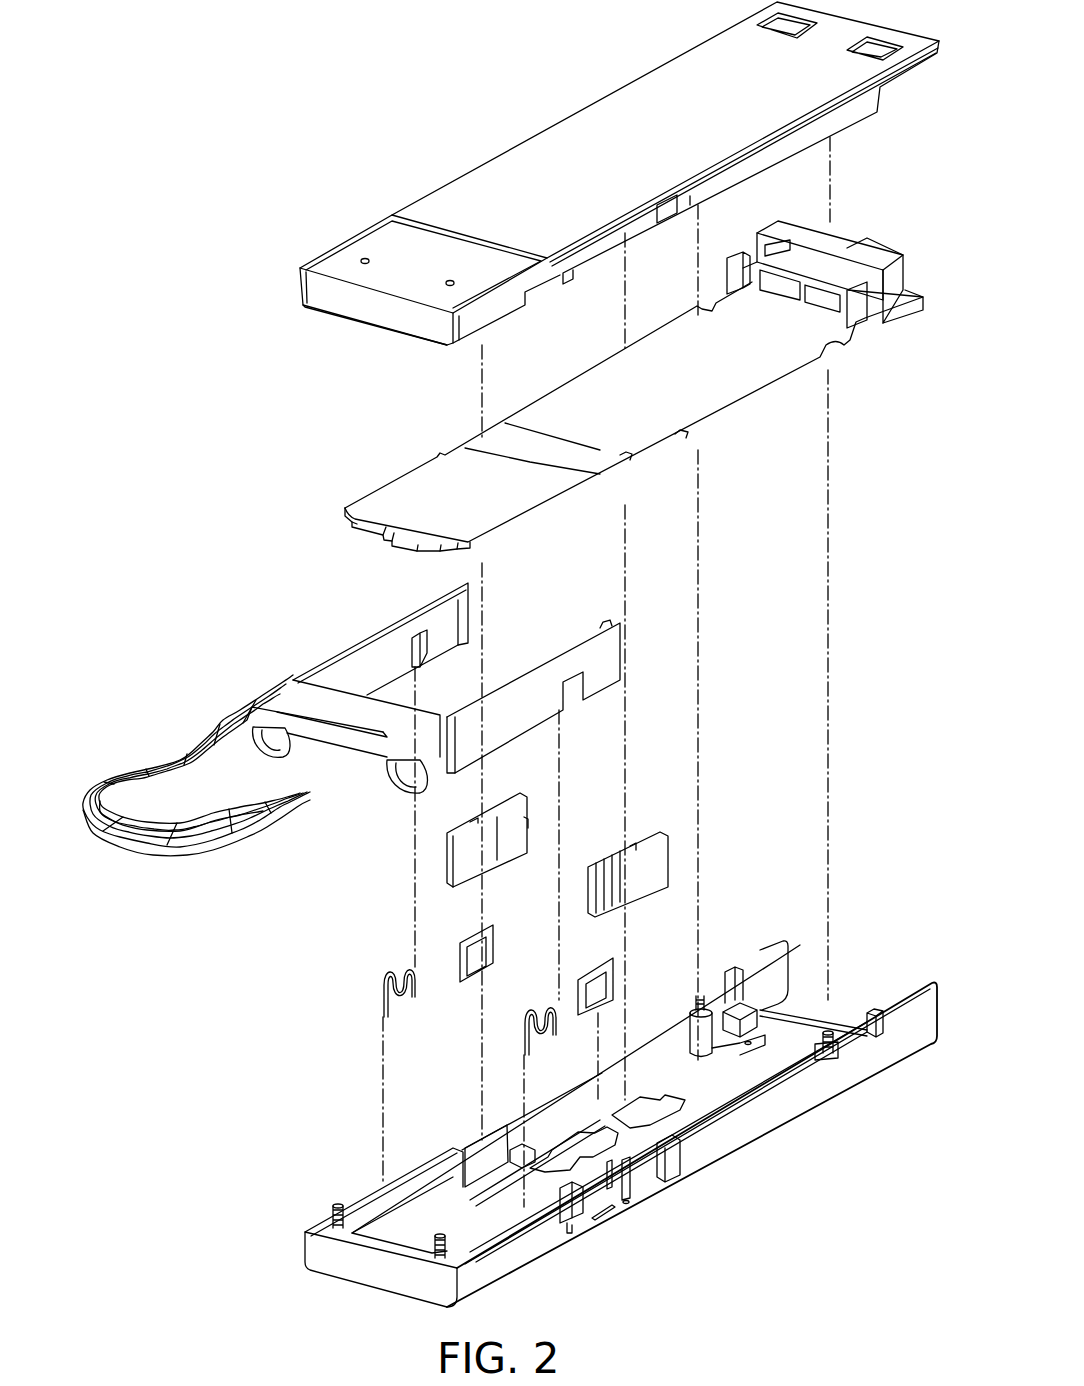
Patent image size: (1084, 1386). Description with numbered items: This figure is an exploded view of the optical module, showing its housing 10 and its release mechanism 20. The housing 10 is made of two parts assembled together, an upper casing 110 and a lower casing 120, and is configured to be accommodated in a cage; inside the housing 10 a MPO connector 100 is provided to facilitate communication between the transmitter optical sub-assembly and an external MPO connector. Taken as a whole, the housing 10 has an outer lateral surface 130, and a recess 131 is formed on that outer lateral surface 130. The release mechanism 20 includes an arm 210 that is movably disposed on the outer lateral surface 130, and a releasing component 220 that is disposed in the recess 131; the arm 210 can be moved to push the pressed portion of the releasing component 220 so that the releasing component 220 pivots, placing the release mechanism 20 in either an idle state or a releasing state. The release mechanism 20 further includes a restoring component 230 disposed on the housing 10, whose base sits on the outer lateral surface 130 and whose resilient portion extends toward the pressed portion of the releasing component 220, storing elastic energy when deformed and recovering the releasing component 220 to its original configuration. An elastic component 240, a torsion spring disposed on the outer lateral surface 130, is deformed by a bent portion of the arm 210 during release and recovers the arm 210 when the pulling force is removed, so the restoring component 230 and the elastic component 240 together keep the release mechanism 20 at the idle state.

The housing 10 is at (213, 145).
The MPO connector 100 is at (840, 252).
The upper casing 110 is at (475, 205).
The lower casing 120 is at (335, 1257).
The outer lateral surface 130 is at (753, 1122).
The recess 131 is at (646, 1194).
The release mechanism 20 is at (768, 737).
The arm 210 is at (382, 652).
The releasing component 220 is at (468, 850).
The restoring component 230 is at (470, 938).
The elastic component 240 is at (378, 1000).